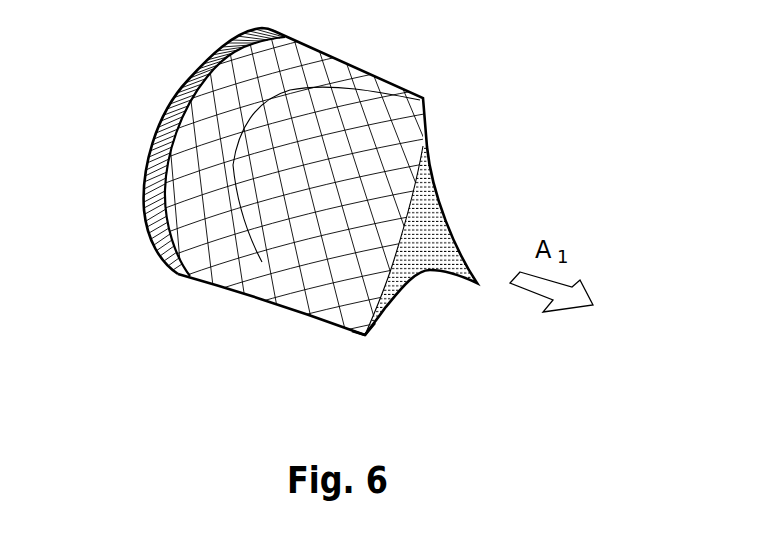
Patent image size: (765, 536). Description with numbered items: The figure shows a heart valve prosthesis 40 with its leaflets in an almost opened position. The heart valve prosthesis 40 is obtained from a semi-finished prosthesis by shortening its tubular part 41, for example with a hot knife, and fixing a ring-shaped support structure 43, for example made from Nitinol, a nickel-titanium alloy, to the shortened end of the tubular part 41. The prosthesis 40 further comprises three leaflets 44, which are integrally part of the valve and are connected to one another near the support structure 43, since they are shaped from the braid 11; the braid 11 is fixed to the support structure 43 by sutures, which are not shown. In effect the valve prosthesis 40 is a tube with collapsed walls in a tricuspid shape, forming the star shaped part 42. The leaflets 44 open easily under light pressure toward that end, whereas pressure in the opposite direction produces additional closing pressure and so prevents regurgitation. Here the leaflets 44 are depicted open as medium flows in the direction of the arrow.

The braid 11 is at (183, 83).
The heart valve prosthesis 40 is at (550, 143).
The tubular part 41 is at (207, 285).
The star shaped part 42 is at (352, 334).
The support structure 43 is at (146, 150).
The leaflets 44 is at (432, 148).